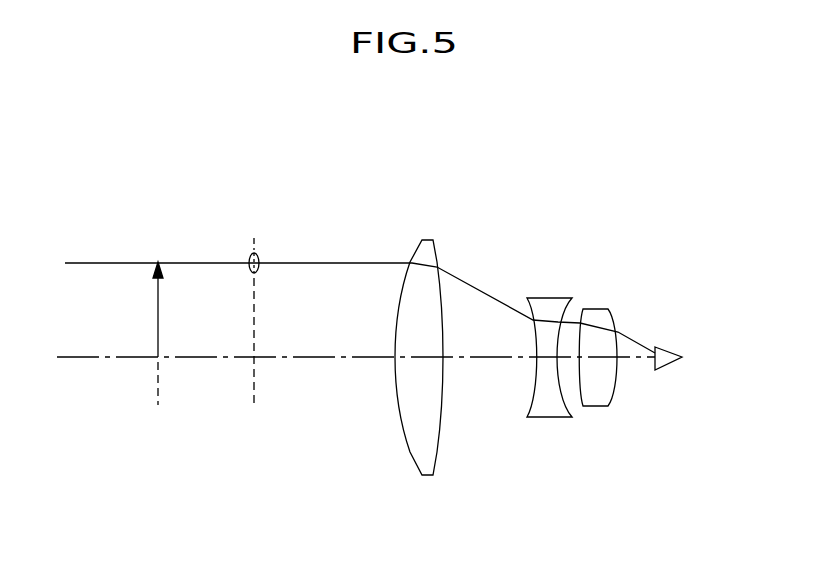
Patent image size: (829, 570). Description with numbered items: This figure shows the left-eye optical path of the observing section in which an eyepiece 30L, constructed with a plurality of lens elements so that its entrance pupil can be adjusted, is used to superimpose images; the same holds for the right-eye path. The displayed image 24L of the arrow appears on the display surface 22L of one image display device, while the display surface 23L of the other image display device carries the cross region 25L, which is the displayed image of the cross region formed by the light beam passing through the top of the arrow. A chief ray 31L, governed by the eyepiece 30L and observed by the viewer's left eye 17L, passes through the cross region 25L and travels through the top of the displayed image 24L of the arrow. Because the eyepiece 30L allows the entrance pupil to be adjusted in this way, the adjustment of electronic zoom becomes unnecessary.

The left eye 17L is at (658, 347).
The display surface 22L is at (158, 385).
The display surface 23L is at (254, 385).
The displayed image of the arrow 24L is at (158, 295).
The cross region 25L is at (248, 256).
The eyepiece 30L is at (623, 202).
The chief ray 31L is at (358, 262).